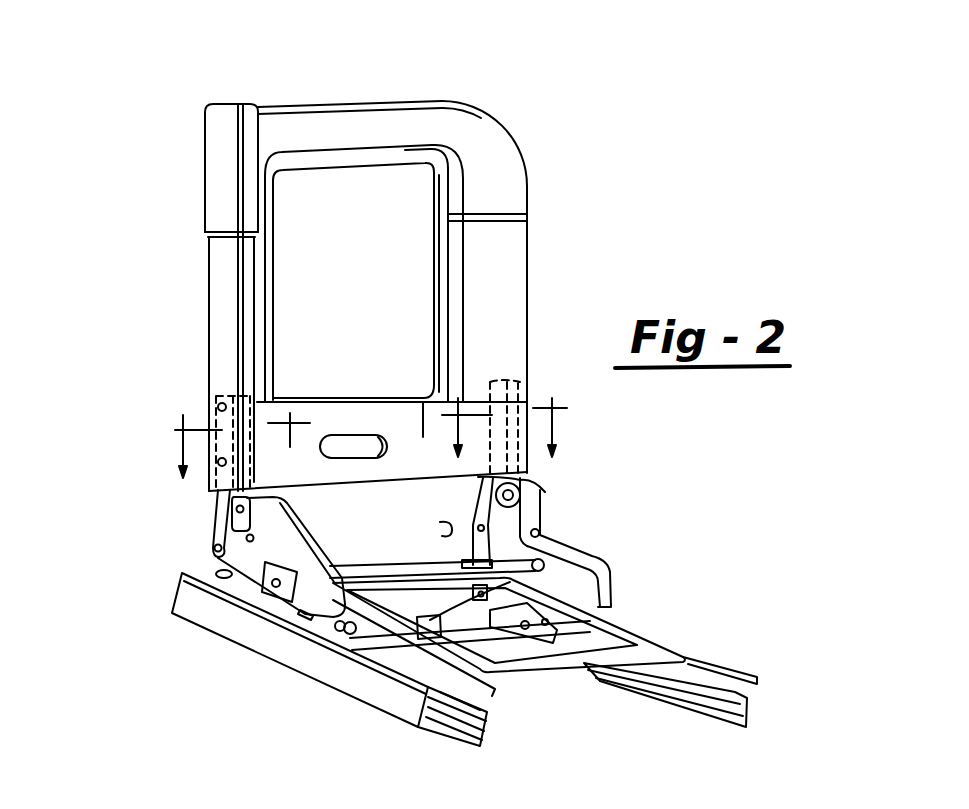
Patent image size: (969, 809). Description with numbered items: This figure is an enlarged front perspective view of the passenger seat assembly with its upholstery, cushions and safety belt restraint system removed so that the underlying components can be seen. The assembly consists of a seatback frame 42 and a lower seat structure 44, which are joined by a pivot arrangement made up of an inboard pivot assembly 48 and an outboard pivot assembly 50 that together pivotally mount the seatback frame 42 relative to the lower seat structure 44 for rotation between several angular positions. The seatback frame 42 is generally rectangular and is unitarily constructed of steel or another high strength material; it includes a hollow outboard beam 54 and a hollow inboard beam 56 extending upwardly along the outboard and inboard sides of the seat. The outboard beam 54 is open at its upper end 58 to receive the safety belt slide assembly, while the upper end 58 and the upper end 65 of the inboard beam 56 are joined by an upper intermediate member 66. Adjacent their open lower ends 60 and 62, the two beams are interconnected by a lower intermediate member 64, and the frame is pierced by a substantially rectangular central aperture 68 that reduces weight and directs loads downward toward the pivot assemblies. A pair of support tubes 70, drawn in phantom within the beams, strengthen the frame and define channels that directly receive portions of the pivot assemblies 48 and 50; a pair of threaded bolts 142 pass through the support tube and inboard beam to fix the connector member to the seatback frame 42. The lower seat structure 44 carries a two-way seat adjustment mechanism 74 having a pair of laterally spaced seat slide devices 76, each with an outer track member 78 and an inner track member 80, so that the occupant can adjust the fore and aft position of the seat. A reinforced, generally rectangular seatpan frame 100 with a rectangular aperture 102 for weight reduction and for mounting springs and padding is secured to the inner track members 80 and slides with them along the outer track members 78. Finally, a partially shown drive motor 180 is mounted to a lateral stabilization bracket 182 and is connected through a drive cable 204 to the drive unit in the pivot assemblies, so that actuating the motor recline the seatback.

The seatback frame 42 is at (533, 170).
The lower seat structure 44 is at (205, 650).
The inboard pivot assembly 48 is at (612, 565).
The outboard pivot assembly 50 is at (212, 558).
The outboard beam 54 is at (213, 262).
The inboard beam 56 is at (490, 296).
The upper end 58 is at (213, 117).
The lower end 60 is at (215, 490).
The lower end 62 is at (527, 478).
The lower intermediate member 64 is at (345, 420).
The upper end 65 is at (493, 142).
The upper intermediate member 66 is at (367, 124).
The central aperture 68 is at (372, 224).
The support tubes 70 is at (215, 425).
The seat adjustment mechanism 74 is at (488, 695).
The seat slide devices 76 is at (340, 703).
The outer track member 78 is at (267, 633).
The inner track member 80 is at (433, 727).
The seatpan frame 100 is at (658, 636).
The rectangular aperture 102 is at (407, 600).
The threaded bolts 142 is at (218, 396).
The drive motor 180 is at (427, 622).
The lateral stabilization bracket 182 is at (350, 640).
The drive cable 204 is at (543, 677).